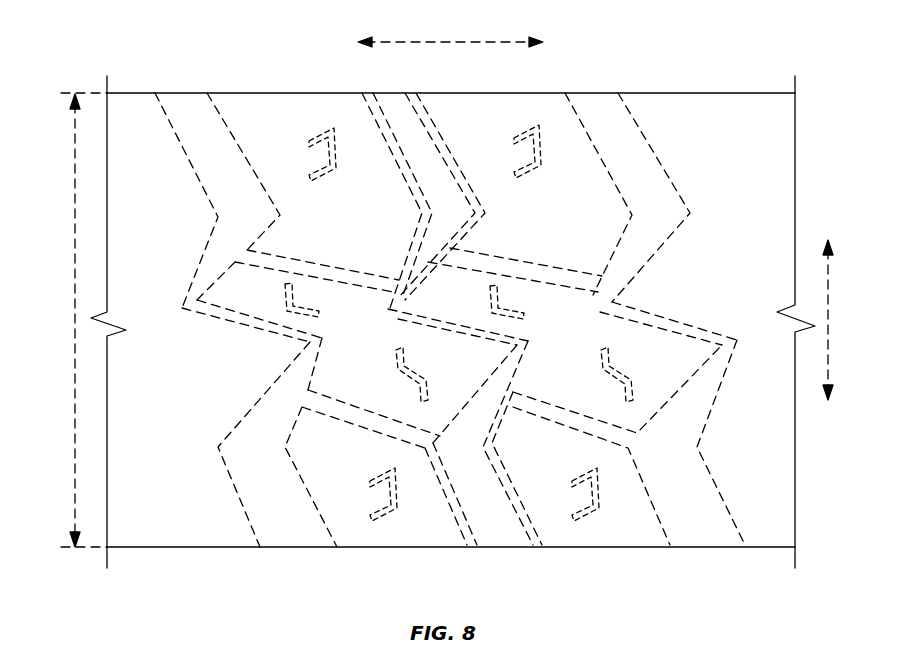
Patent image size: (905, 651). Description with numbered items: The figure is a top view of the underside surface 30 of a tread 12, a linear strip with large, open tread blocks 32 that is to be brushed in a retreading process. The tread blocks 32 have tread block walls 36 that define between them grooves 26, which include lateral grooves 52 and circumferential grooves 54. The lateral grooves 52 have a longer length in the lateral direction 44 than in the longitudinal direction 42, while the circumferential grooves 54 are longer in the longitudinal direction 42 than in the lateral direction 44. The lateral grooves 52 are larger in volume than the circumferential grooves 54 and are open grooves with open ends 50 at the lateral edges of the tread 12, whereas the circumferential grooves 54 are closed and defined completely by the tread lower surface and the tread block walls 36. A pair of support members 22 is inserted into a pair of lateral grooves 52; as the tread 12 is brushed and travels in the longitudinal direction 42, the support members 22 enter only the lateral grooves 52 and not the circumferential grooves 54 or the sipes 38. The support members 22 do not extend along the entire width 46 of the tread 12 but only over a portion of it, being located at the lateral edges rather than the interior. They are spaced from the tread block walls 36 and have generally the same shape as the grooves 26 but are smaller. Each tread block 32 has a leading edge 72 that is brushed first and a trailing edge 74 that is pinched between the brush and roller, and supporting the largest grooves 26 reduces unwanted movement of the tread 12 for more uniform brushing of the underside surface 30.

The tread 12 is at (789, 44).
The support member 22 is at (417, 93).
The groove 26 is at (212, 163).
The underside surface 30 is at (778, 170).
The tread block 32 is at (547, 108).
The tread block wall 36 is at (413, 312).
The sipe 38 is at (610, 377).
The longitudinal direction 42 is at (483, 40).
The lateral direction 44 is at (828, 315).
The width 46 is at (73, 312).
The open end 50 is at (388, 92).
The lateral groove 52 is at (422, 175).
The circumferential groove 54 is at (357, 417).
The leading edge 72 is at (450, 317).
The trailing edge 74 is at (247, 325).